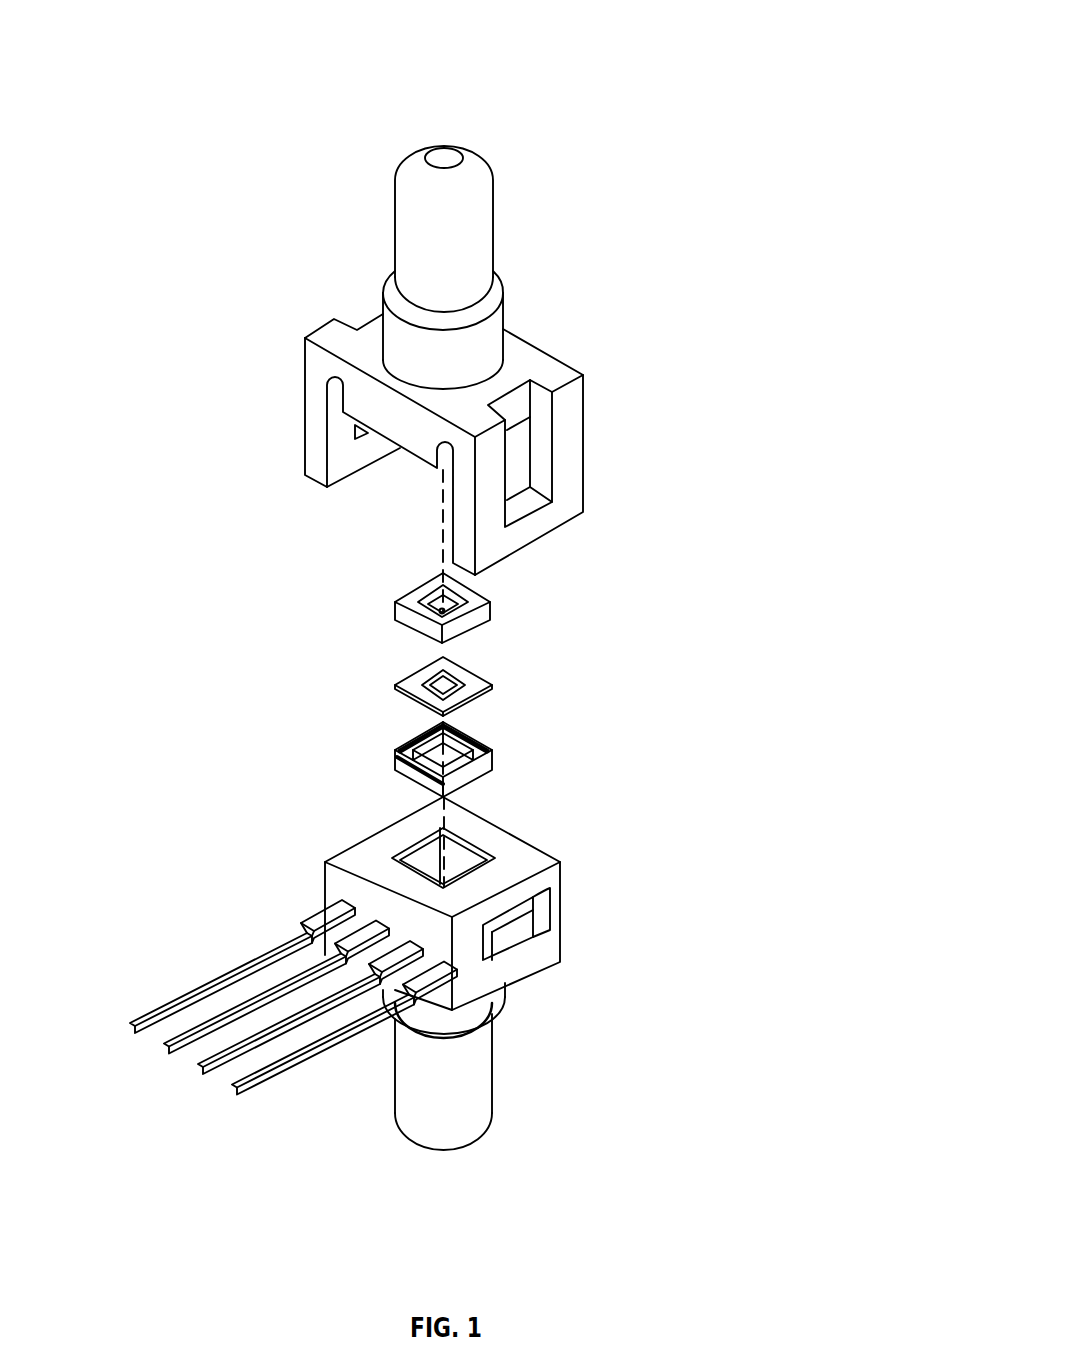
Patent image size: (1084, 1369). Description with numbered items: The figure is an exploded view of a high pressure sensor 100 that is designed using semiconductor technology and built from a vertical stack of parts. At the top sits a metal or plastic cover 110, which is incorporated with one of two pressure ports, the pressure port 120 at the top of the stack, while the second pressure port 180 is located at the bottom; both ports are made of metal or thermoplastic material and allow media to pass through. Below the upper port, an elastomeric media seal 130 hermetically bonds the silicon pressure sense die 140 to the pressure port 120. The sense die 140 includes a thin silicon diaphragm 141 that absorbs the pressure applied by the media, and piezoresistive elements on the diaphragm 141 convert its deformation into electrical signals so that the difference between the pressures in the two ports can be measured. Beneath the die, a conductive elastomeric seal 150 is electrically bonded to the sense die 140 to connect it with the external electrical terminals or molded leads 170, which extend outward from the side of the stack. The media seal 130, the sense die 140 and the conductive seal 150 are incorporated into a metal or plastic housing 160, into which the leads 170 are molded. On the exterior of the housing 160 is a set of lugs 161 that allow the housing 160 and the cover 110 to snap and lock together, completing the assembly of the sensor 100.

The high pressure sensor 100 is at (656, 70).
The cover 110 is at (500, 176).
The pressure port 120 is at (492, 268).
The elastomeric media seal 130 is at (505, 603).
The silicon pressure sense die 140 is at (420, 671).
The diaphragm 141 is at (450, 692).
The conductive elastomeric seal 150 is at (480, 780).
The housing 160 is at (490, 903).
The lugs 161 is at (523, 938).
The molded leads 170 is at (221, 1096).
The pressure port 180 is at (492, 1065).